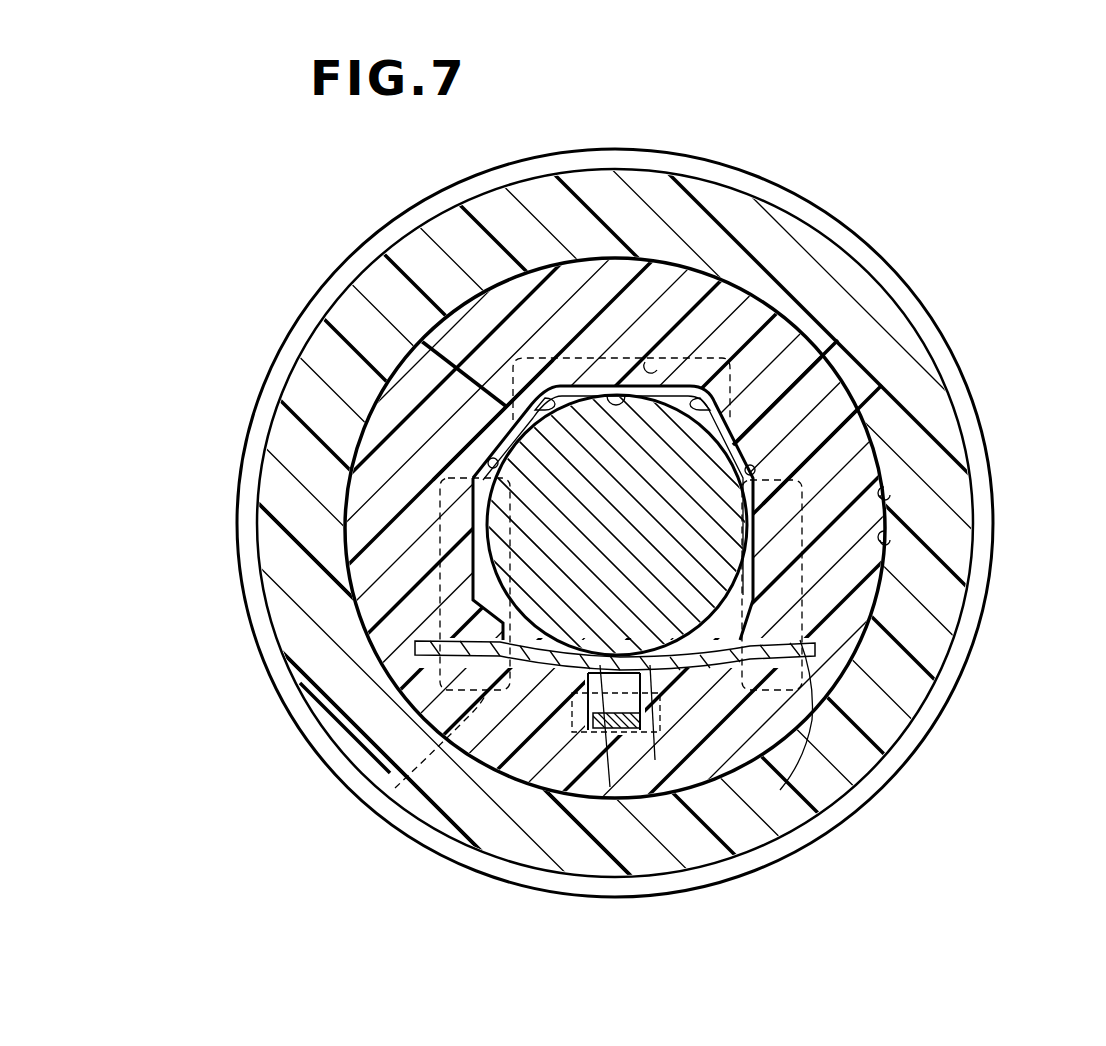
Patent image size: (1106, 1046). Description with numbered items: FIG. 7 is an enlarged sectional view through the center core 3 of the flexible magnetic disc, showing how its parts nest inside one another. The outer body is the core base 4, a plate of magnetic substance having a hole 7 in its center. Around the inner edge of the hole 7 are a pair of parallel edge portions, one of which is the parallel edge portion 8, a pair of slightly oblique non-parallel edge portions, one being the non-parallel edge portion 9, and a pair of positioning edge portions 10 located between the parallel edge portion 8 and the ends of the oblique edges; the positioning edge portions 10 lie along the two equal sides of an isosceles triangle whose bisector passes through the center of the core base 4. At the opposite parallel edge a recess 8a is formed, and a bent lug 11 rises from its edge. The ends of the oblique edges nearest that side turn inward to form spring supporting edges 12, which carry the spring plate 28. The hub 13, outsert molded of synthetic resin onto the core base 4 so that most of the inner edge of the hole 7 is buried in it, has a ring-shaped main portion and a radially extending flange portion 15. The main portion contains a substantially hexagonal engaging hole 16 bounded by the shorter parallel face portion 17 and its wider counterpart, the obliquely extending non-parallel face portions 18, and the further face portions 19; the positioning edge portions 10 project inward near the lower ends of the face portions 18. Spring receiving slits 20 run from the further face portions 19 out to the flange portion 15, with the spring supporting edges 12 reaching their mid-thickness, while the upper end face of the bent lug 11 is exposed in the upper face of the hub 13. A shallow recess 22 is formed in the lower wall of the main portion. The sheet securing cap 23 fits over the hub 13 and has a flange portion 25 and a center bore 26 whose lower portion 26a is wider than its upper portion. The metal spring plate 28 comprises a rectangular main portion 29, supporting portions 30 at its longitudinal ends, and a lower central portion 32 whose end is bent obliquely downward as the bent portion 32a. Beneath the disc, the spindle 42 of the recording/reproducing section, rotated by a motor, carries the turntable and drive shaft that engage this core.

The center core 3 is at (1005, 240).
The core base 4 is at (944, 358).
The hole 7 is at (730, 392).
The parallel edge portion 8 is at (637, 364).
The recess 8a is at (553, 667).
The non-parallel edge portion 9 is at (450, 625).
The positioning edge portions 10 is at (527, 422).
The bent lug 11 is at (641, 735).
The spring supporting edges 12 is at (470, 632).
The hub 13 is at (790, 332).
The flange portion 15 is at (838, 324).
The engaging hole 16 is at (603, 385).
The parallel face portion 17 is at (493, 399).
The non-parallel face portions 18 is at (490, 464).
The further face portions 19 is at (478, 542).
The spring receiving slits 20 is at (372, 706).
The shallow recess 22 is at (760, 842).
The sheet securing cap 23 is at (958, 437).
The flange portion 25 is at (957, 487).
The center bore 26 is at (887, 500).
The lower portion 26a is at (887, 543).
The spring plate 28 is at (650, 687).
The main portion 29 is at (603, 669).
The supporting portions 30 is at (417, 652).
The lower central portion 32 is at (415, 820).
The bent portion 32a is at (585, 792).
The spindle 42 is at (478, 512).